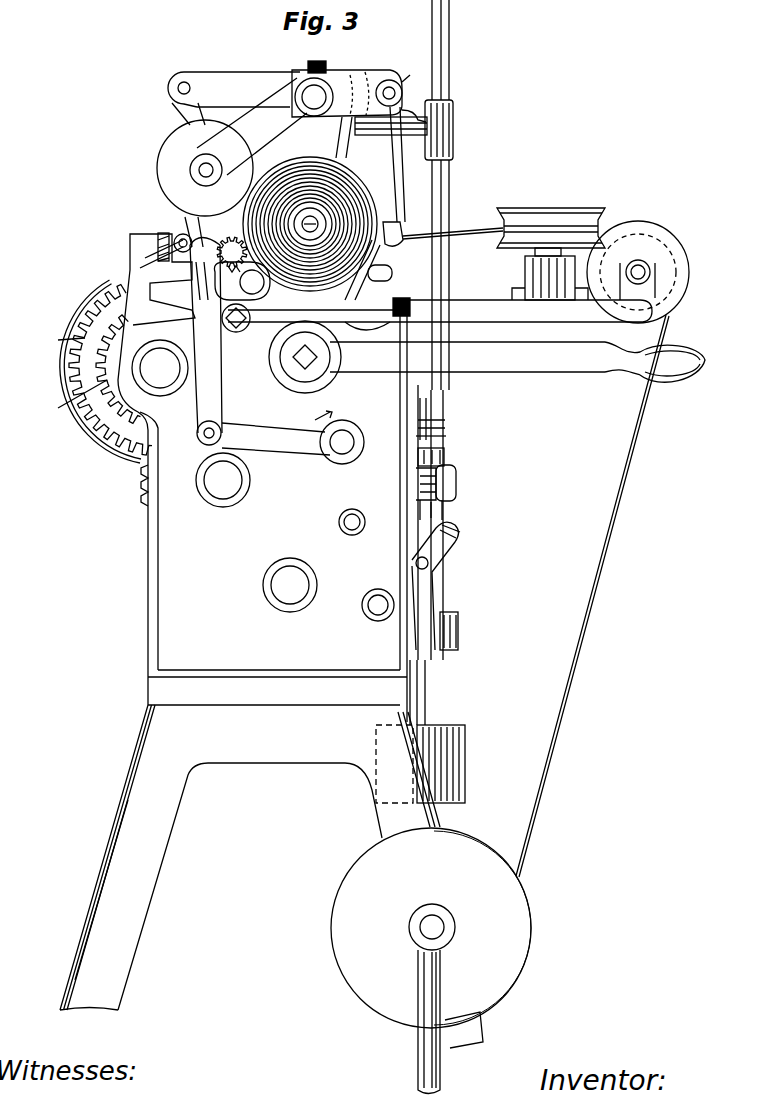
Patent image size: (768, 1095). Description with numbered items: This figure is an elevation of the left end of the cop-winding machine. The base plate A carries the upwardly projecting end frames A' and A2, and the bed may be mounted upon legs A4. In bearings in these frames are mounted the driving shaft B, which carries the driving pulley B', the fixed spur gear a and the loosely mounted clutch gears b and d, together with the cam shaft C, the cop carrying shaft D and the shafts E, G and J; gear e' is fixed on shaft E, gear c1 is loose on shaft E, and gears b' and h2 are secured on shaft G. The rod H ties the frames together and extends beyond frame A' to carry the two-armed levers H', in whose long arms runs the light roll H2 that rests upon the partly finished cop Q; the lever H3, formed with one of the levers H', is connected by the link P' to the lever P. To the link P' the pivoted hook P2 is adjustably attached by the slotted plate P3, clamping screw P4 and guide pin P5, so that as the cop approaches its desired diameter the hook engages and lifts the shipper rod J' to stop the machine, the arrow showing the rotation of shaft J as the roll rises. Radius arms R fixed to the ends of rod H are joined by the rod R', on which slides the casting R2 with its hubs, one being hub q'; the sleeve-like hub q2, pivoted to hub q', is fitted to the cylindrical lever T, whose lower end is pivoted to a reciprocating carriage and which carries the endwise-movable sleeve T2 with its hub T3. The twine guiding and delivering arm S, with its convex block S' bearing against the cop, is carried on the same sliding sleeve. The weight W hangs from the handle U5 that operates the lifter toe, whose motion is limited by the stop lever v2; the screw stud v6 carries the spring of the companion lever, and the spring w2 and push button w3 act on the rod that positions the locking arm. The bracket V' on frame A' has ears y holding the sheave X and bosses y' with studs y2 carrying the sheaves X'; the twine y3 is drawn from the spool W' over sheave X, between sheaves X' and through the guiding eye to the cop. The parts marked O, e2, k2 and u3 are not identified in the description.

The base plate A is at (250, 846).
The end frame A' is at (262, 427).
The end frame A2 is at (378, 826).
The legs A4 is at (125, 842).
The driving shaft B is at (160, 368).
The pulley B' is at (106, 378).
The spur gear wheel a is at (127, 357).
The spur gear wheel b is at (62, 340).
The spur gear wheel d is at (73, 399).
The gear e' is at (133, 485).
The cam shaft C is at (290, 585).
The shaft E is at (223, 480).
The shaft G is at (242, 281).
The gear h2 is at (229, 245).
The gear wheel b' is at (233, 274).
The cop carrying shaft D is at (320, 218).
The rod H is at (347, 81).
The two-armed lever H' is at (252, 126).
The light roll H2 is at (205, 168).
The lever H3 is at (234, 89).
The shaft J is at (342, 437).
The shipper rod J' is at (153, 247).
The hand lever O is at (487, 357).
The lever P is at (276, 439).
The link P' is at (186, 274).
The pivoted hook P2 is at (185, 284).
The slotted plate P3 is at (200, 289).
The clamping screw P4 is at (208, 226).
The guide pin P5 is at (187, 228).
The cop Q is at (375, 278).
The radius arm R is at (387, 76).
The rod R' is at (409, 67).
The casting R2 is at (405, 115).
The twine guiding and delivering arm S is at (403, 164).
The block S' is at (401, 233).
The cylindrical lever T is at (437, 362).
The sleeve T2 is at (440, 406).
The hub T3 is at (446, 424).
The handle U5 is at (458, 545).
The bracket V' is at (437, 322).
The weight W is at (455, 764).
The spool W' is at (431, 961).
The sheave X is at (638, 272).
The sheave X' is at (551, 216).
The ear y is at (637, 284).
The boss y' is at (544, 278).
The stud y2 is at (535, 252).
The twine y3 is at (536, 544).
The gear c1 is at (391, 274).
The dotted guide e2 is at (359, 90).
The link k2 is at (349, 138).
The hub q' is at (391, 138).
The sleeve-like hub q2 is at (452, 130).
The stud u3 is at (375, 606).
The stop lever v2 is at (356, 522).
The screw stud v6 is at (446, 436).
The spring w2 is at (444, 458).
The push button w3 is at (447, 492).